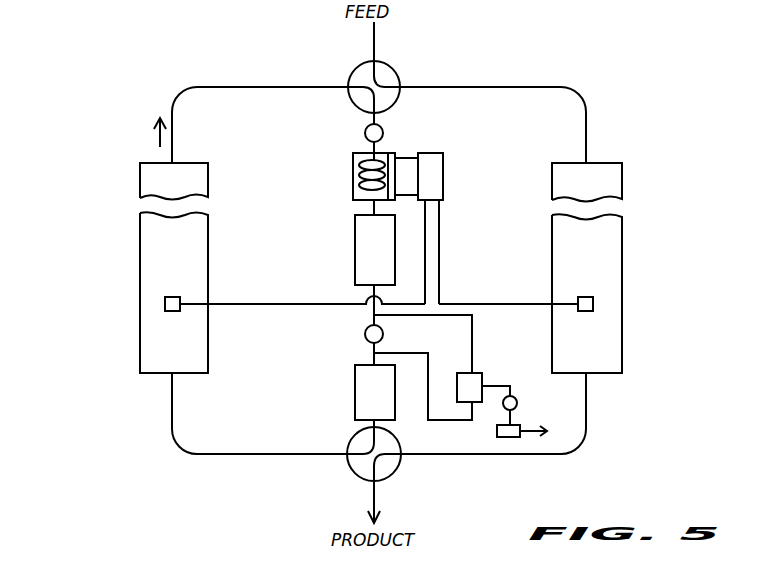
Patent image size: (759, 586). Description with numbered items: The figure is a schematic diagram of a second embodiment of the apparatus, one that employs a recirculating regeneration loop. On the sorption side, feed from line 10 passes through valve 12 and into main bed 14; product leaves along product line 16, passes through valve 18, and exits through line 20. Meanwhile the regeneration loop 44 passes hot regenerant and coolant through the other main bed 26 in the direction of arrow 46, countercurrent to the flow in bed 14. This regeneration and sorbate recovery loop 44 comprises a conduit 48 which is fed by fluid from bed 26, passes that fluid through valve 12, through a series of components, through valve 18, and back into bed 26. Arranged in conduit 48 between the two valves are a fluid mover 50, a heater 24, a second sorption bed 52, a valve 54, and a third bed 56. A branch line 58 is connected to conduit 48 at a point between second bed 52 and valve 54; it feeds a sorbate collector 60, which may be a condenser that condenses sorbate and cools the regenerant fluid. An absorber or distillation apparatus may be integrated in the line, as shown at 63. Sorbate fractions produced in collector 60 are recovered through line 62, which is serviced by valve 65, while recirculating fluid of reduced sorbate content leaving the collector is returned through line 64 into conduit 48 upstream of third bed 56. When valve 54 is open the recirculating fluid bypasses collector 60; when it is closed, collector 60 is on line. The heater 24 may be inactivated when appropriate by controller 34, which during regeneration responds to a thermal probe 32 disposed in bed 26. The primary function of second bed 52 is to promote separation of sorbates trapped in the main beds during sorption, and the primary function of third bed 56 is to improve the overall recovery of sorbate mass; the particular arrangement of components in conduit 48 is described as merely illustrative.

The line 10 is at (374, 42).
The valve 12 is at (392, 68).
The main bed 14 is at (622, 263).
The product line 16 is at (525, 456).
The valve 18 is at (352, 468).
The line 20 is at (376, 493).
The heater 24 is at (353, 178).
The main bed 26 is at (140, 255).
The thermal probe 32 is at (180, 297).
The controller 34 is at (443, 178).
The regeneration loop 44 is at (338, 209).
The arrow 46 is at (160, 138).
The conduit 48 is at (375, 148).
The fluid mover 50 is at (365, 131).
The second sorption bed 52 is at (355, 246).
The valve 54 is at (365, 334).
The third bed 56 is at (355, 383).
The branch line 58 is at (472, 337).
The sorbate collector 60 is at (482, 378).
The line 62 is at (512, 392).
The absorber or distillation apparatus 63 is at (497, 432).
The line 64 is at (403, 353).
The valve 65 is at (518, 404).